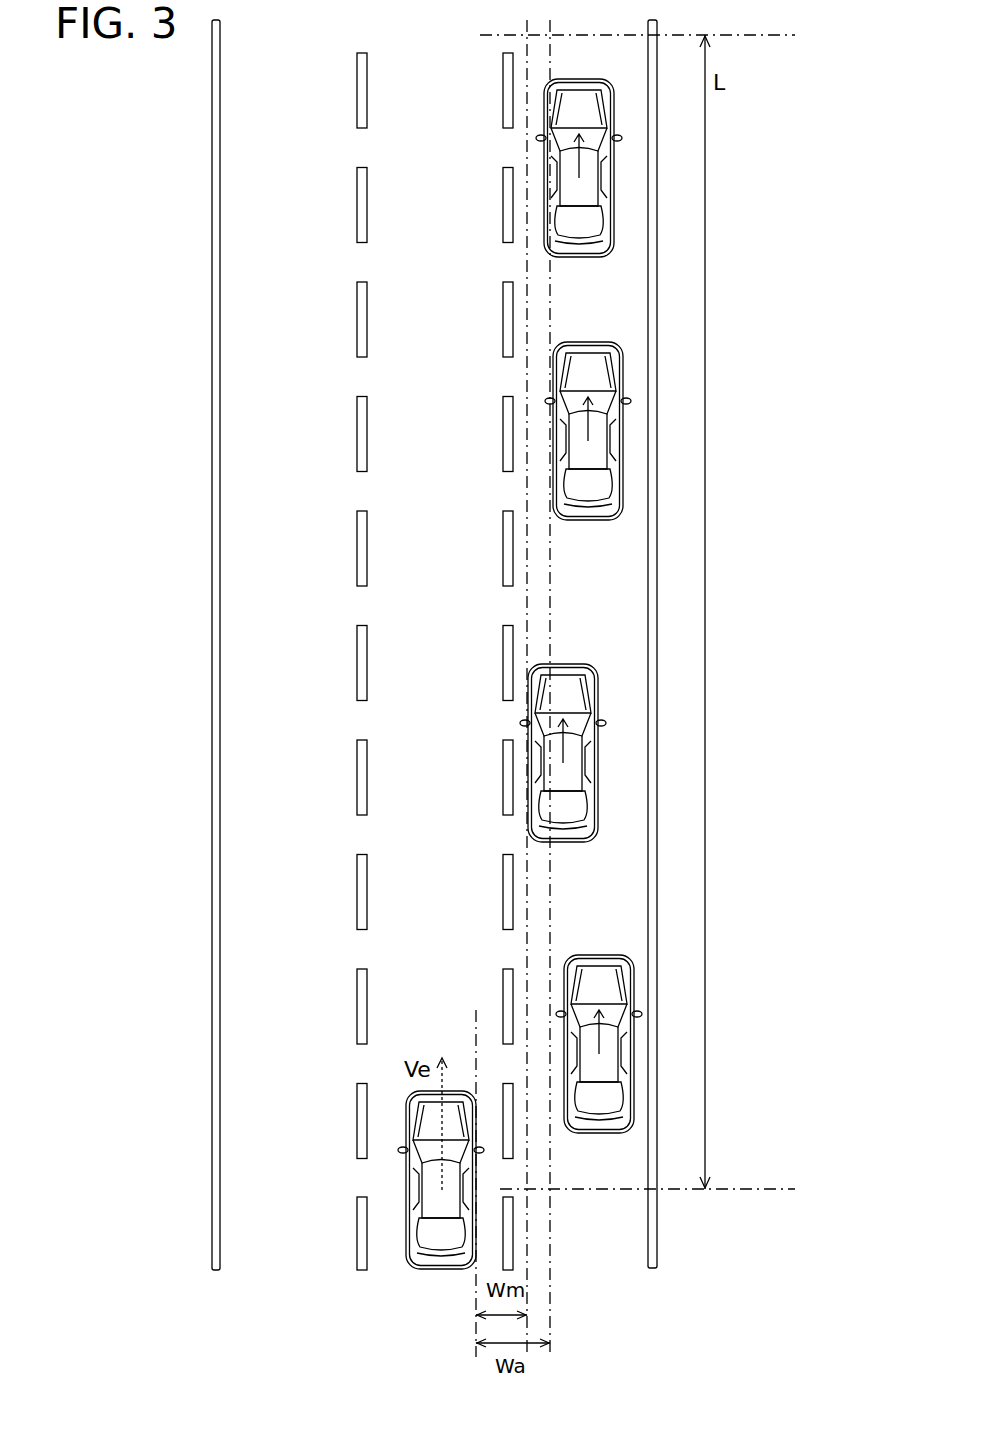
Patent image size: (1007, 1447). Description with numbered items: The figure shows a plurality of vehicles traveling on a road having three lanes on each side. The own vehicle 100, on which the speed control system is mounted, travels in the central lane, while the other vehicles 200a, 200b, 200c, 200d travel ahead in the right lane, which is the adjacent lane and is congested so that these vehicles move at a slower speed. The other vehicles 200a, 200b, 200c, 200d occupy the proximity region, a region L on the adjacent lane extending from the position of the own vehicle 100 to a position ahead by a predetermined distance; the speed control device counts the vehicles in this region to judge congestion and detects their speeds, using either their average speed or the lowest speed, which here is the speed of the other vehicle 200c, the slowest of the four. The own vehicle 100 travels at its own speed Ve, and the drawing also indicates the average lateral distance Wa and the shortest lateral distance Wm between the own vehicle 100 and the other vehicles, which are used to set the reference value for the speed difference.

The other vehicle 200d is at (594, 188).
The other vehicle 200c is at (590, 450).
The other vehicle 200b is at (577, 757).
The other vehicle 200a is at (605, 1068).
The own vehicle 100 is at (427, 1248).